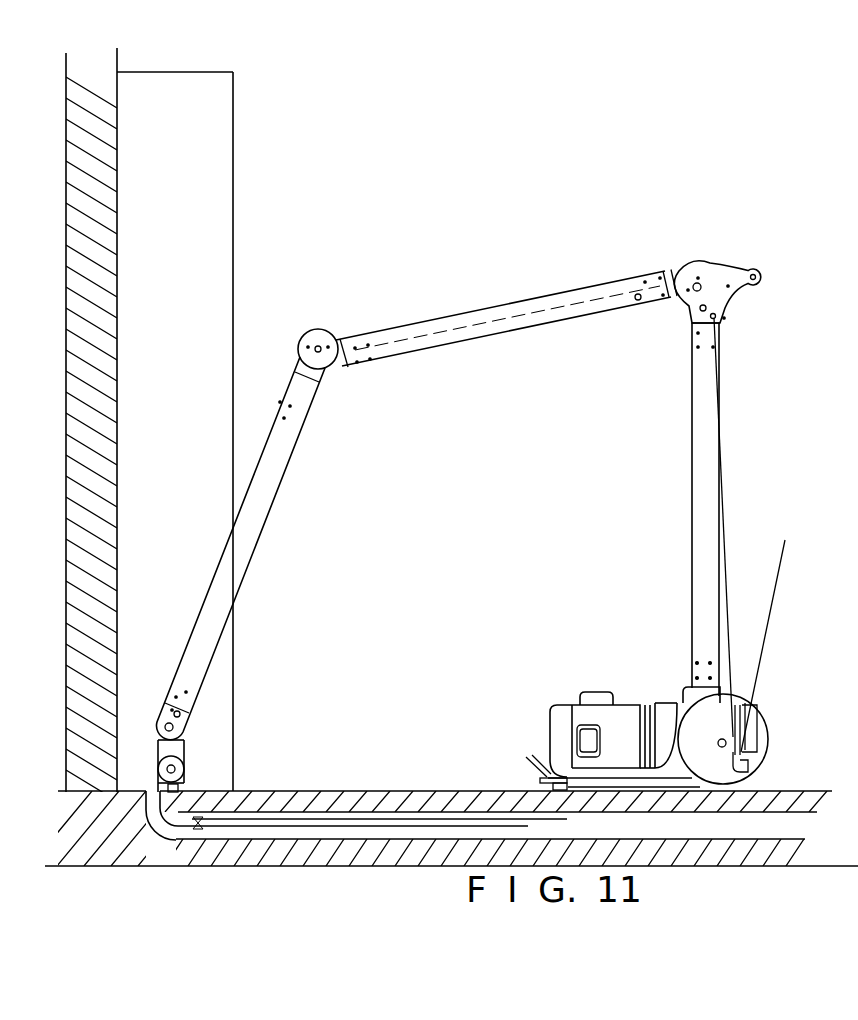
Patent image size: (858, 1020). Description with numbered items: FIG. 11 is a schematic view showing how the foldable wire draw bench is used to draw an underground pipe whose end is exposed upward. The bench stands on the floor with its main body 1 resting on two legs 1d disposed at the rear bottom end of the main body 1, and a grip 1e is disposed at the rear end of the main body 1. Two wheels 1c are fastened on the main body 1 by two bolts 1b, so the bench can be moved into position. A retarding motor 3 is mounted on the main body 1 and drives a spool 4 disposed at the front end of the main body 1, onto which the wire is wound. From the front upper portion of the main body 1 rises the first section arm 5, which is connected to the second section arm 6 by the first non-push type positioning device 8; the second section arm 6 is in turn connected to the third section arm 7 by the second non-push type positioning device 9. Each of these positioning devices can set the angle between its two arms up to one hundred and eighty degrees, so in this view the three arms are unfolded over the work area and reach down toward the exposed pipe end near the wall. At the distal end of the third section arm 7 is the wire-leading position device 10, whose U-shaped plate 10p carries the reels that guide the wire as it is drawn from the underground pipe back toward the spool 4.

The main body 1 is at (580, 778).
The bolts 1b is at (719, 740).
The wheels 1c is at (770, 745).
The legs 1d is at (553, 786).
The grip 1e is at (547, 776).
The retarding motor 3 is at (600, 725).
The spool 4 is at (738, 718).
The first section arm 5 is at (712, 466).
The second section arm 6 is at (510, 315).
The third section arm 7 is at (262, 517).
The first non-push type positioning device 8 is at (697, 287).
The second non-push type positioning device 9 is at (316, 343).
The wire-leading position device 10 is at (183, 745).
The U-shaped plate 10p is at (180, 787).